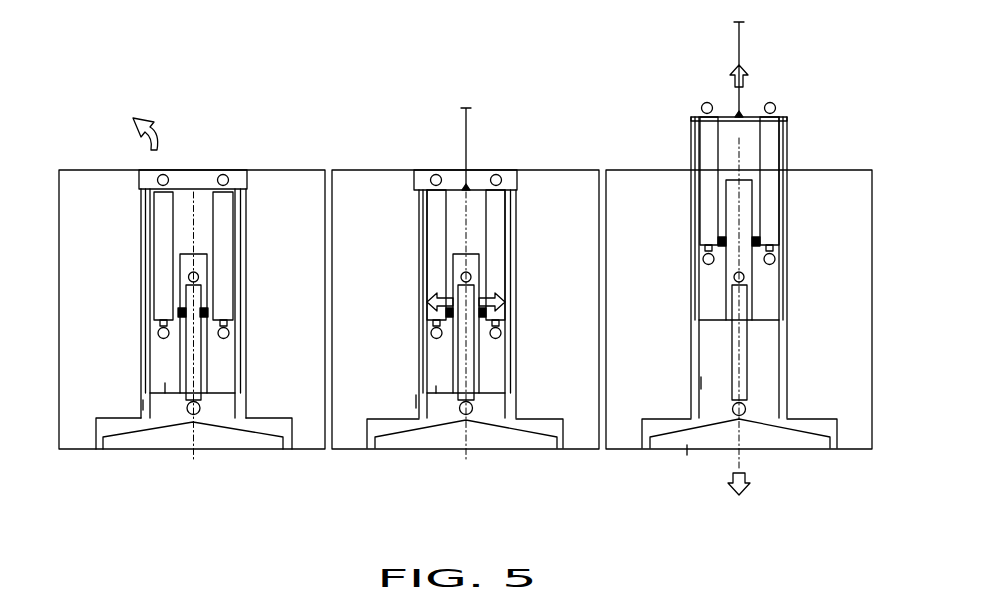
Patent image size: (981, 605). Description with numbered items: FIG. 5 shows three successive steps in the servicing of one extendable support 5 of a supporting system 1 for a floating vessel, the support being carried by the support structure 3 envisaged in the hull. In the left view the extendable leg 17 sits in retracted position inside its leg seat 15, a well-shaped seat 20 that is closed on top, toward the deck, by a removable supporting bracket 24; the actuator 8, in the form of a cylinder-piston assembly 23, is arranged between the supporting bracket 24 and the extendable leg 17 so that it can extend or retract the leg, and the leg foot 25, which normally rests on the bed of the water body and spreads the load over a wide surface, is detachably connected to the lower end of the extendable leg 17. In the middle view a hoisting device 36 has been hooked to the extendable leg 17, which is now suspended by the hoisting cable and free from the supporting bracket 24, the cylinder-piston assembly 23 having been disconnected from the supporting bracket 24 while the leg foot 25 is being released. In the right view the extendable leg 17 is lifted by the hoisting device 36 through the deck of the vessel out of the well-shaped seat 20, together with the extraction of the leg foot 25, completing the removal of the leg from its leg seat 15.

The supporting system 1 is at (252, 138).
The support structure 3 is at (277, 207).
The extendable support 5 is at (164, 386).
The actuator 8 is at (165, 217).
The leg seat 15 is at (146, 407).
The extendable leg 17 is at (217, 367).
The well-shaped seat 20 is at (492, 160).
The cylinder-piston assembly 23 is at (703, 168).
The supporting bracket 24 is at (183, 173).
The leg foot 25 is at (211, 433).
The hoisting device 36 is at (460, 130).